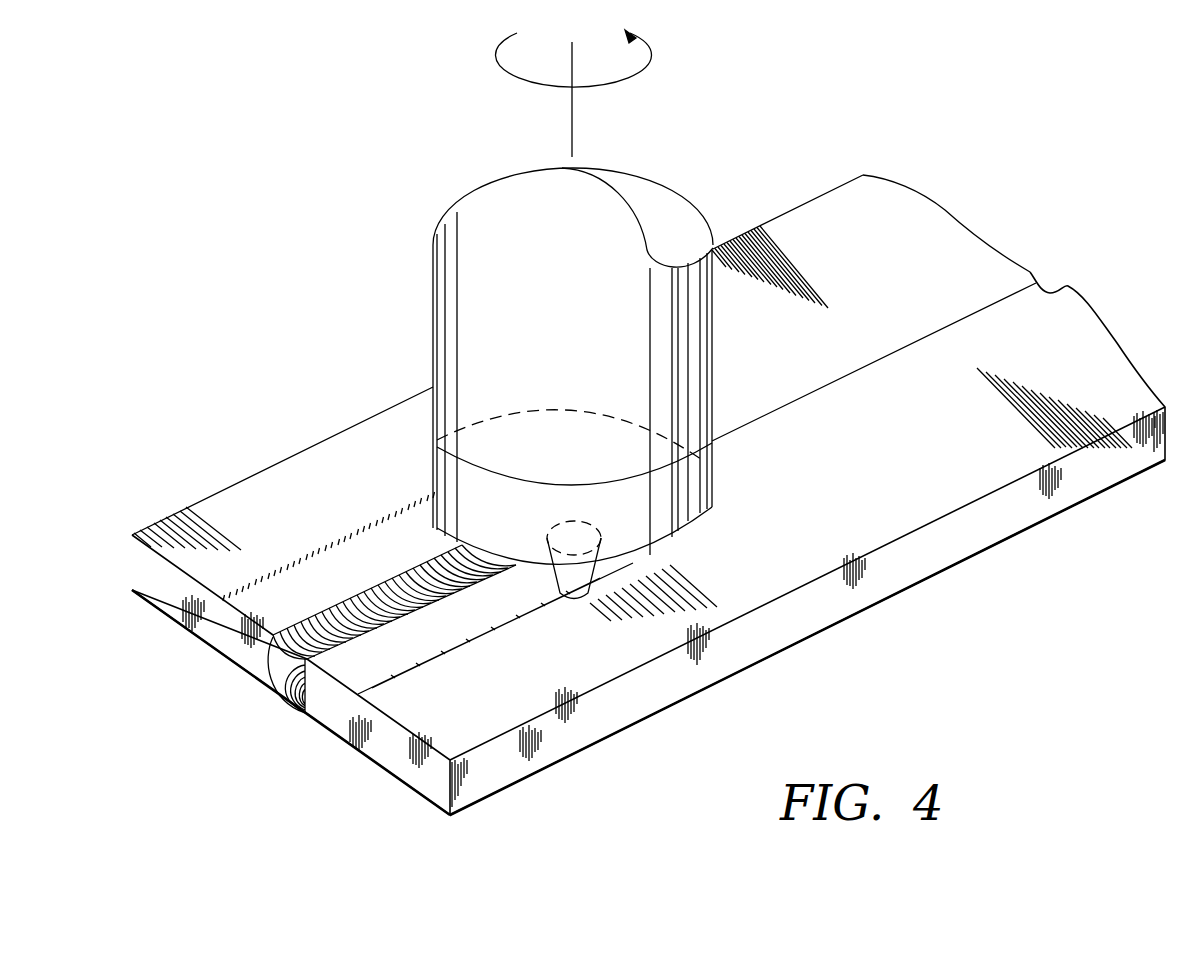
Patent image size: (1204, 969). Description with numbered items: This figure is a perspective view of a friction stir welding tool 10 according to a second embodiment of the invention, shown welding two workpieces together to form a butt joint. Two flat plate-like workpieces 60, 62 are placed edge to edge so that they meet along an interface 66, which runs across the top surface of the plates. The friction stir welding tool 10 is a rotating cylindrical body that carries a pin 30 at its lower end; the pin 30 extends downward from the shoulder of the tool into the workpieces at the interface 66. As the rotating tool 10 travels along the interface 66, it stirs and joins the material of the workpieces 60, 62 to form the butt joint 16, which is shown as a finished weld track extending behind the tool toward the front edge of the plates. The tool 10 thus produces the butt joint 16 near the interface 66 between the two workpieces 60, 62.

The friction stir welding tool 10 is at (414, 313).
The butt joint 16 is at (268, 673).
The pin 30 is at (580, 574).
The workpiece 60 is at (266, 535).
The workpiece 62 is at (1087, 350).
The interface 66 is at (1064, 289).